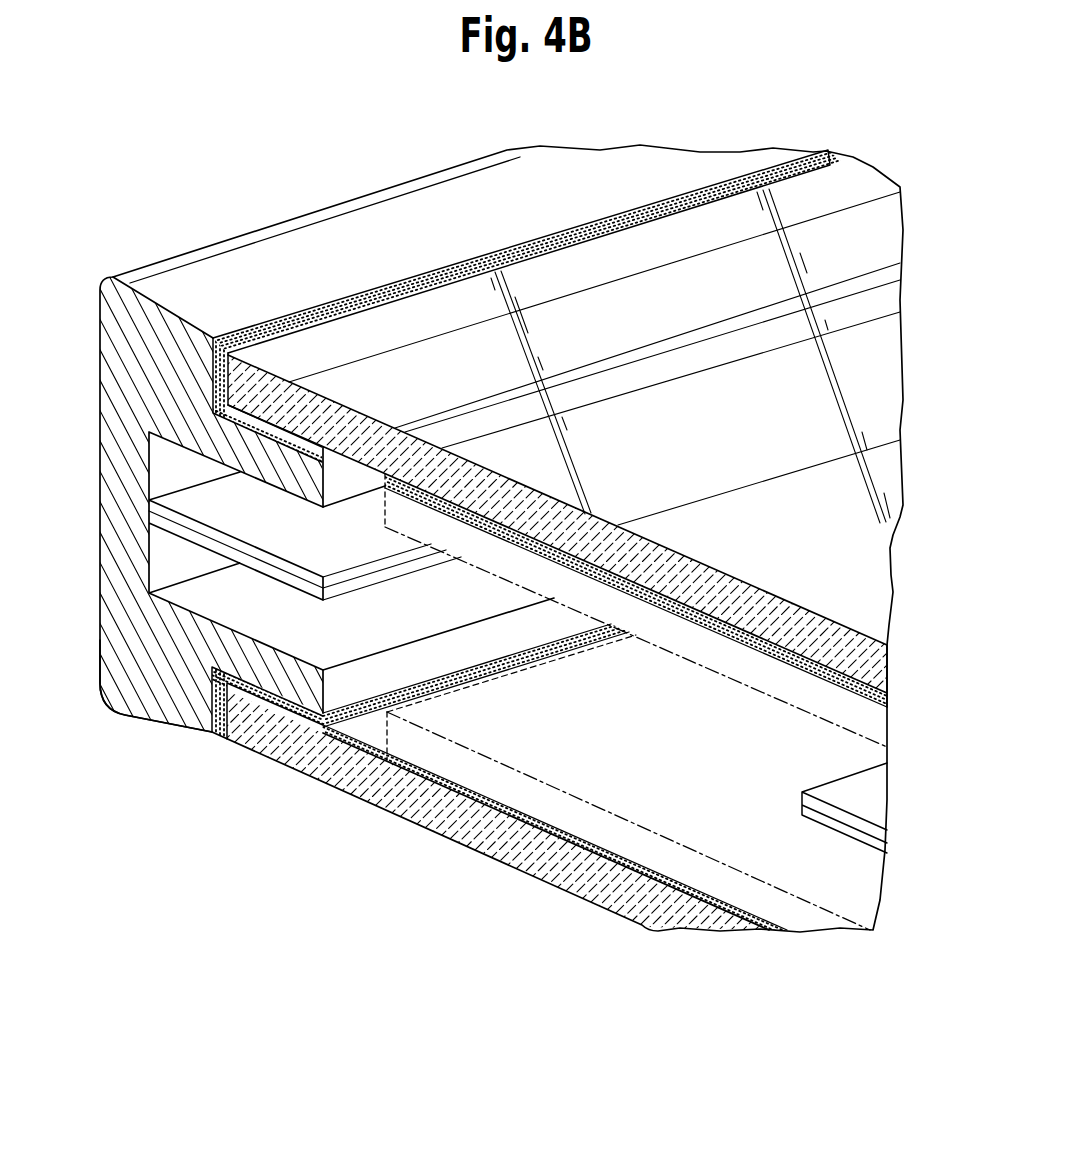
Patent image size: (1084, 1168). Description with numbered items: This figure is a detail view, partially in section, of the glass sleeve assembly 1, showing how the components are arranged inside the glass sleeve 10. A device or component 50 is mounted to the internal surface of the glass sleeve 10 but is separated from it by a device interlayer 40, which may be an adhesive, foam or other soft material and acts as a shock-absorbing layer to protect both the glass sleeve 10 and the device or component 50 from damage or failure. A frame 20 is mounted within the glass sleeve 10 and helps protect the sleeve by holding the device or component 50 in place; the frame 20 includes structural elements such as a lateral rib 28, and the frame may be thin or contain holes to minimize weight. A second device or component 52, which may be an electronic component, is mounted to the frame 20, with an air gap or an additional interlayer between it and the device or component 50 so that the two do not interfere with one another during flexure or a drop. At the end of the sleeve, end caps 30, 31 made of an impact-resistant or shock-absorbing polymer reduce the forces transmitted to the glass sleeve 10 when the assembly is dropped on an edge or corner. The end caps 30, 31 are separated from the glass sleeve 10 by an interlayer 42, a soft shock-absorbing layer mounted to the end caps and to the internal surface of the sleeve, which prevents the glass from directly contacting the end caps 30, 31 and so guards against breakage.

The glass sleeve assembly 1 is at (190, 204).
The glass sleeve 10 is at (600, 893).
The frame 20 is at (197, 500).
The lateral rib 28 is at (860, 807).
The end cap 30 is at (133, 330).
The end cap 31 is at (135, 672).
The device interlayer 40 is at (508, 810).
The interlayer 42 is at (212, 380).
The device or component 50 is at (870, 713).
The second device or component 52 is at (793, 920).